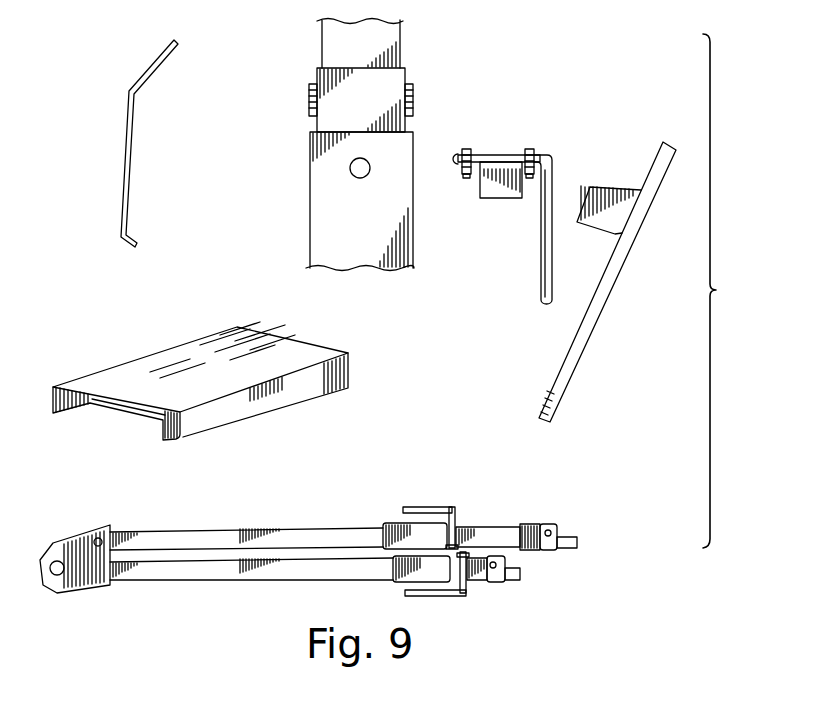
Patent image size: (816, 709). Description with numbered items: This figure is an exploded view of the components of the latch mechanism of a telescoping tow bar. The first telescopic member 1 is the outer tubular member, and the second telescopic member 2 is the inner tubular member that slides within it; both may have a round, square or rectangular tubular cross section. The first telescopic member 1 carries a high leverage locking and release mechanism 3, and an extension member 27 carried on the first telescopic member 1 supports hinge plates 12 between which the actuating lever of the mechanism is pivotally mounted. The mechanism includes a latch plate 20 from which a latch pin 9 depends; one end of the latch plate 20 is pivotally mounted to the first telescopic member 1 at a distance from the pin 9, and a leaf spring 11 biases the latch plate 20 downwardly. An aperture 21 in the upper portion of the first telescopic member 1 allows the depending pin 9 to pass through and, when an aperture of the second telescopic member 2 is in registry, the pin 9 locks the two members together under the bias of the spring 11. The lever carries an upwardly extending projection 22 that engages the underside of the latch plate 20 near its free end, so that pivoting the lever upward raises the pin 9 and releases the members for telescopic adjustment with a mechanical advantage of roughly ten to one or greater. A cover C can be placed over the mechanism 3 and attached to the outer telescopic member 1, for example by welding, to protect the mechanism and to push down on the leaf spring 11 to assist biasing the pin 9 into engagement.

The first telescopic member 1 is at (310, 204).
The second telescopic member 2 is at (323, 36).
The locking and release mechanism 3 is at (542, 282).
The latch pin 9 is at (618, 187).
The leaf spring 11 is at (122, 153).
The hinge plates 12 is at (410, 83).
The latch plate 20 is at (560, 378).
The aperture 21 is at (350, 172).
The projection 22 is at (516, 198).
The extension member 27 is at (310, 123).
The cover C is at (106, 365).